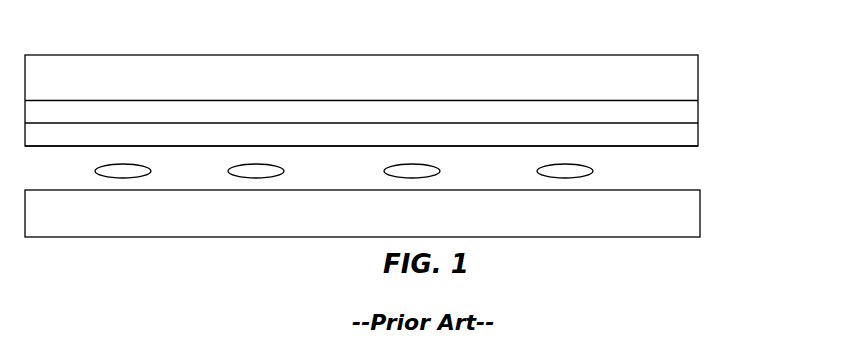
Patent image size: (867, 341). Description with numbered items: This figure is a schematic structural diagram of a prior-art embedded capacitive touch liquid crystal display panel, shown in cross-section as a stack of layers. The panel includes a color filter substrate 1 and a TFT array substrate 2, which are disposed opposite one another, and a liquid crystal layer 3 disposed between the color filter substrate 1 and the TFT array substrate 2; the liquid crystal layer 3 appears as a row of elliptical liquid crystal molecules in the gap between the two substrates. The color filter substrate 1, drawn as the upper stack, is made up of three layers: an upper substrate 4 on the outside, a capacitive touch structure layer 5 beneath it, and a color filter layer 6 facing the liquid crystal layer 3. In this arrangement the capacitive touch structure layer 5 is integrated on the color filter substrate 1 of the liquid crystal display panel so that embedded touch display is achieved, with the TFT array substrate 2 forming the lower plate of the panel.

The color filter substrate 1 is at (778, 25).
The TFT array substrate 2 is at (663, 213).
The liquid crystal layer 3 is at (663, 168).
The upper substrate 4 is at (650, 77).
The capacitive touch structure layer 5 is at (650, 110).
The color filter layer 6 is at (663, 135).